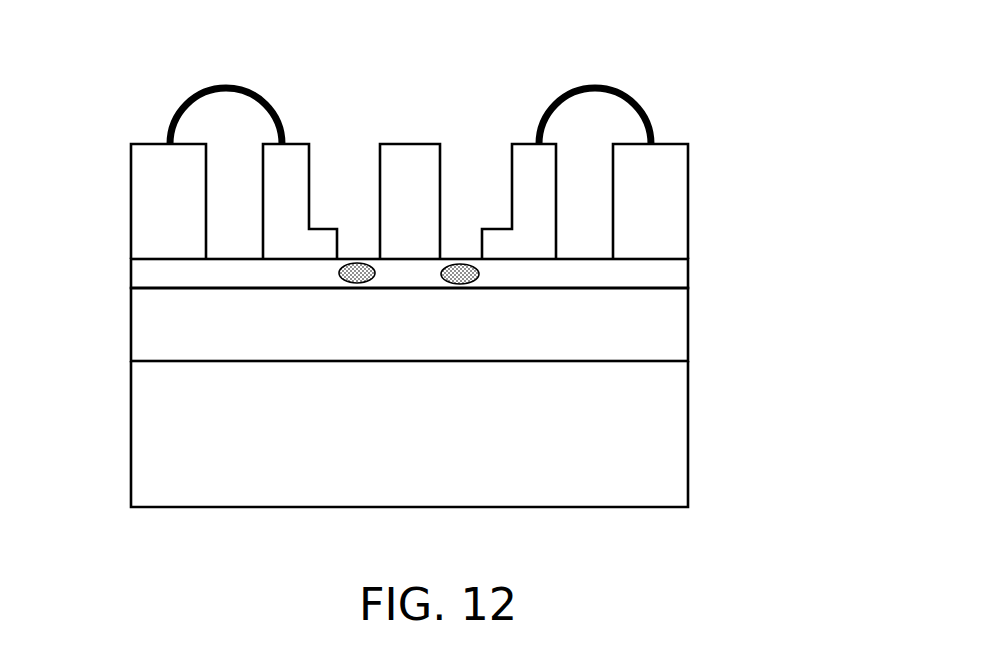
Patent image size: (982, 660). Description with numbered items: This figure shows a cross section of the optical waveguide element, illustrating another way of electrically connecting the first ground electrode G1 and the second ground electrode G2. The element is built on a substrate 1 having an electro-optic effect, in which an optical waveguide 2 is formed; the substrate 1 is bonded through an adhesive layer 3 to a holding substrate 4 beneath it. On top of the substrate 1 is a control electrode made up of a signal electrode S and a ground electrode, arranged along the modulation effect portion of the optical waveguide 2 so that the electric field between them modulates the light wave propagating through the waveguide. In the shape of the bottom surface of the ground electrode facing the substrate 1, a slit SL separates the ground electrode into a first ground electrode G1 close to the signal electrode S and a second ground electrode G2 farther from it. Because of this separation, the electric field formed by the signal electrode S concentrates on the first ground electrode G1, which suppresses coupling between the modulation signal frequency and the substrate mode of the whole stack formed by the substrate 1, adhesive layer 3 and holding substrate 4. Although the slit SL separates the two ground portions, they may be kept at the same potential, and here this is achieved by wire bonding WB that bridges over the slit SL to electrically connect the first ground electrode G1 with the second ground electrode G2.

The substrate 1 is at (667, 279).
The optical waveguide 2 is at (357, 265).
The adhesive layer 3 is at (667, 342).
The holding substrate 4 is at (667, 446).
The signal electrode S is at (403, 167).
The first ground electrode G1 is at (525, 245).
The second ground electrode G2 is at (638, 238).
The wire bonding WB is at (628, 90).
The slit SL is at (587, 232).